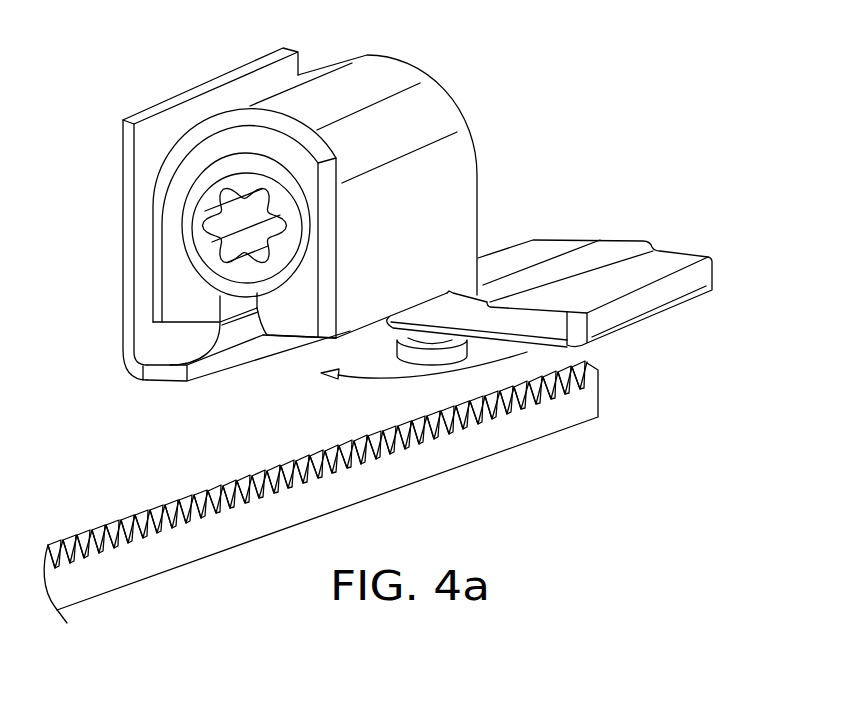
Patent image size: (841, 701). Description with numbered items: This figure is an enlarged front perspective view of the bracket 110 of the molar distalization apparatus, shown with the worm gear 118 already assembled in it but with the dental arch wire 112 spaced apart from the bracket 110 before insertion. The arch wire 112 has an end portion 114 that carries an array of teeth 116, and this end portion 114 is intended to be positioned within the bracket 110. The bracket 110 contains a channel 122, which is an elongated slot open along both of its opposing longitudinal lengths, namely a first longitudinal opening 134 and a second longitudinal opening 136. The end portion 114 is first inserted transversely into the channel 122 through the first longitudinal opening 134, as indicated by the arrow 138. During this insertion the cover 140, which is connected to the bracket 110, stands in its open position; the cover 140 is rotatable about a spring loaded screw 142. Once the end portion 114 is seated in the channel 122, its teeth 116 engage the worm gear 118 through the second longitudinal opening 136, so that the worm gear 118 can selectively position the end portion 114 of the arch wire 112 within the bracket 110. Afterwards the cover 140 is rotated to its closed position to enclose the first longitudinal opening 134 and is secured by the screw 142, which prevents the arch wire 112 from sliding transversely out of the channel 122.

The bracket 110 is at (406, 59).
The dental arch wire 112 is at (321, 507).
The end portion 114 is at (427, 477).
The array of teeth 116 is at (350, 440).
The worm gear 118 is at (189, 202).
The channel 122 is at (185, 322).
The first longitudinal opening 134 is at (170, 366).
The second longitudinal opening 136 is at (186, 290).
The arrow 138 is at (238, 300).
The cover 140 is at (660, 248).
The spring loaded screw 142 is at (455, 345).